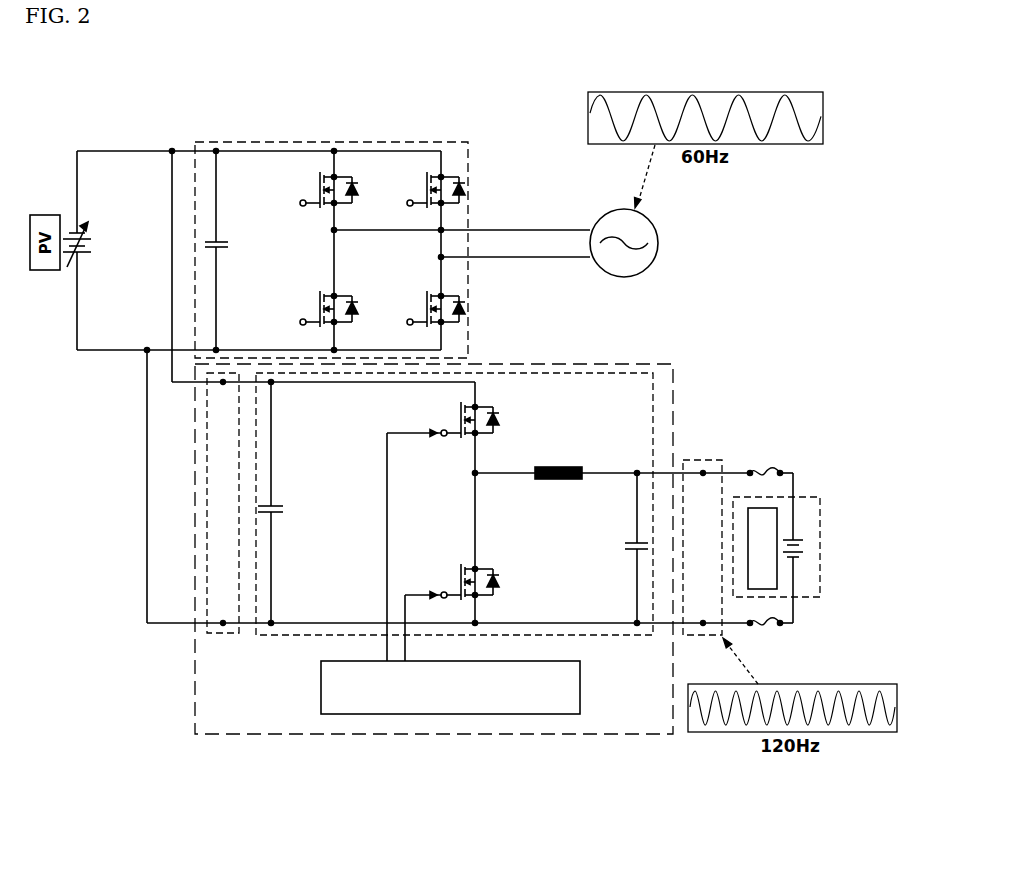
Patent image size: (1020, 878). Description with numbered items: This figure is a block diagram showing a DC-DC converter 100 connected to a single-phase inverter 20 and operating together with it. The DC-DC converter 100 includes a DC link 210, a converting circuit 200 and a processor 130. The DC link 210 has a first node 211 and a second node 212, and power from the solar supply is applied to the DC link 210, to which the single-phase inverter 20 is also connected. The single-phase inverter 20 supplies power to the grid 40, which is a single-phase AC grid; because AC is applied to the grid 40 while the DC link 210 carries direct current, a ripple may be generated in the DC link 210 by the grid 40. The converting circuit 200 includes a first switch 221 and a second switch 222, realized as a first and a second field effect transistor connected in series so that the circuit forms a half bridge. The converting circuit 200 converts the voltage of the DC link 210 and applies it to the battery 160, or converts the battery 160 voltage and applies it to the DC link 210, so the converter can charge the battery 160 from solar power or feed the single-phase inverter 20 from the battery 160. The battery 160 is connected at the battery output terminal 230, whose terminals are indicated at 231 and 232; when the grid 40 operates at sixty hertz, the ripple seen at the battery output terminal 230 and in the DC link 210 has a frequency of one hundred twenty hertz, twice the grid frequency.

The single-phase inverter 20 is at (255, 142).
The grid 40 is at (642, 217).
The DC-DC converter 100 is at (673, 392).
The processor 130 is at (580, 677).
The battery 160 is at (807, 497).
The converting circuit 200 is at (532, 373).
The DC link 210 is at (228, 635).
The first node 211 is at (223, 382).
The second node 212 is at (223, 623).
The first switch 221 is at (492, 413).
The second switch 222 is at (492, 575).
The battery output terminal 230 is at (703, 460).
The first output terminal 231 is at (703, 473).
The second output terminal 232 is at (703, 623).